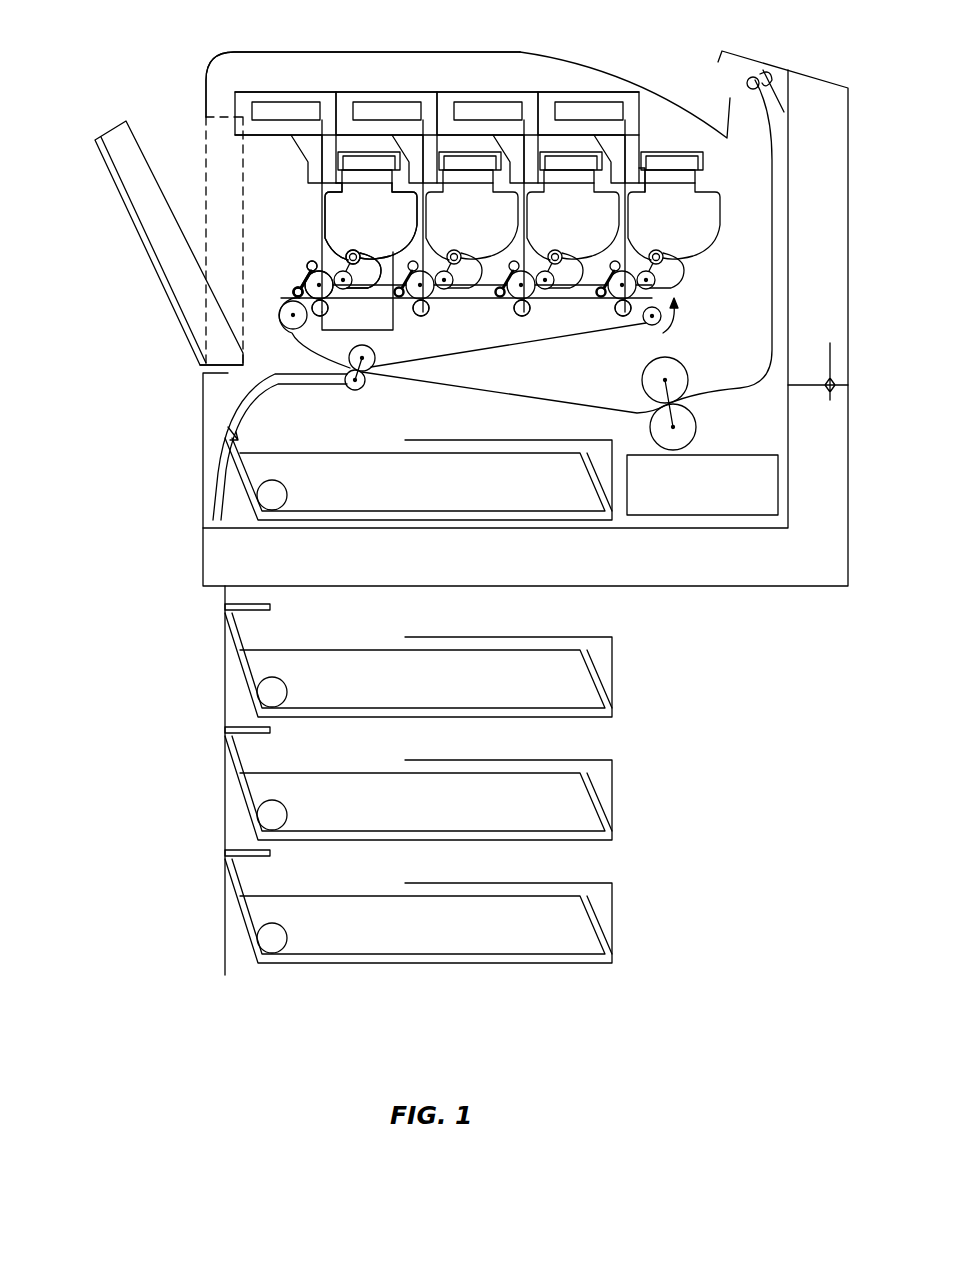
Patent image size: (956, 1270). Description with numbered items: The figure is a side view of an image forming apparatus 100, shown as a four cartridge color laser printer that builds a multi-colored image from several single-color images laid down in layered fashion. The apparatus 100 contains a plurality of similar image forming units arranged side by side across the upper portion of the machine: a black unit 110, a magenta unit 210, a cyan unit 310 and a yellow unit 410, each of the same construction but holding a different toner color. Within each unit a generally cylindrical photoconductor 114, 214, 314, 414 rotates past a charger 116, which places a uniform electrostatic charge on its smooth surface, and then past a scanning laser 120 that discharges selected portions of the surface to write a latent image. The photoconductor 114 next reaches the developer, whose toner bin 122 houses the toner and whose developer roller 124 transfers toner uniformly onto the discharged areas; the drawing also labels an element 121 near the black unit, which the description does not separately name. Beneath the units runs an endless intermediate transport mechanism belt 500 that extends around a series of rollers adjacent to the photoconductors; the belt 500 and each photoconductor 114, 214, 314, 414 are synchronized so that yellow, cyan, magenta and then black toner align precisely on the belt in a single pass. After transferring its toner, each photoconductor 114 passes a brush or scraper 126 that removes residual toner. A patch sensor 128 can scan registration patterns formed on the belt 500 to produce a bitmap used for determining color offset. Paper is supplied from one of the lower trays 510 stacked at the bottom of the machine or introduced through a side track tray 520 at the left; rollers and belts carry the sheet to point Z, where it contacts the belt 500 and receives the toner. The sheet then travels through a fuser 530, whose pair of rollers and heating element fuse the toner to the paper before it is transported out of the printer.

The image forming apparatus 100 is at (167, 96).
The scanning laser 120 is at (278, 92).
The side track tray 520 is at (121, 143).
The toner hopper 121 is at (323, 193).
The patch sensor 128 is at (322, 242).
The charger 116 is at (307, 265).
The brush or scraper 126 is at (303, 283).
The photoconductor 114 is at (305, 288).
The developer roller 124 is at (311, 312).
The toner bin 122 is at (288, 334).
The black (K) image forming unit 110 is at (354, 243).
The magenta (M) image forming unit 210 is at (455, 243).
The cyan (C) image forming unit 310 is at (556, 243).
The yellow (Y) image forming unit 410 is at (657, 243).
The photoconductor 214 is at (443, 316).
The photoconductor 314 is at (513, 307).
The photoconductor 414 is at (613, 307).
The intermediate transport mechanism belt 500 is at (596, 350).
The fuser 530 is at (694, 412).
The lower trays 510 is at (262, 668).
The point Z is at (230, 399).